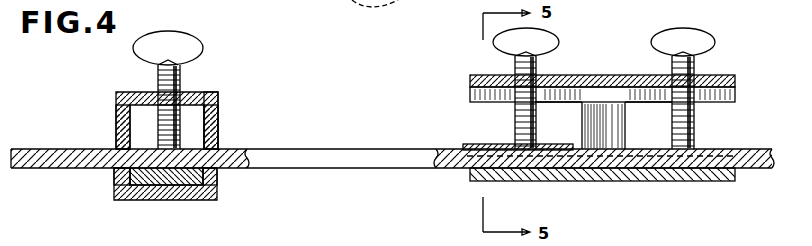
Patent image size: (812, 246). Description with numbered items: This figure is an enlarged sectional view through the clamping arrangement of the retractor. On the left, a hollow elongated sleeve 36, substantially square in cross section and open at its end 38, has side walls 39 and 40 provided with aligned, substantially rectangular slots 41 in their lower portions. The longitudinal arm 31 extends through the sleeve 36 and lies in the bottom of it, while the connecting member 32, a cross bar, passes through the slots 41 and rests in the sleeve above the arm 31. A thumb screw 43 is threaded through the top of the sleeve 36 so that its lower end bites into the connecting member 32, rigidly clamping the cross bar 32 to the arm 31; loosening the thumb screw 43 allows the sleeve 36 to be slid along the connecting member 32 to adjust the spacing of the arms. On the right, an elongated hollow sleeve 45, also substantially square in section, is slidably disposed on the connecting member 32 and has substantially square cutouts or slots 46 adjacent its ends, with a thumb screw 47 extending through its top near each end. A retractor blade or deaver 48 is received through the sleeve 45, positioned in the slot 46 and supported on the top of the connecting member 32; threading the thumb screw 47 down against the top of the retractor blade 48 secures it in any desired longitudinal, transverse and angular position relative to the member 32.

The longitudinal arm 31 is at (172, 185).
The connecting member 32 is at (316, 149).
The sleeve 36 is at (131, 92).
The open end 38 is at (206, 117).
The side wall 39 is at (218, 130).
The side wall 40 is at (116, 117).
The slot 41 is at (114, 172).
The thumb screw 43 is at (193, 52).
The sleeve 45 is at (587, 75).
The slot 46 is at (470, 99).
The thumb screw 47 is at (554, 41).
The retractor blade 48 is at (463, 145).